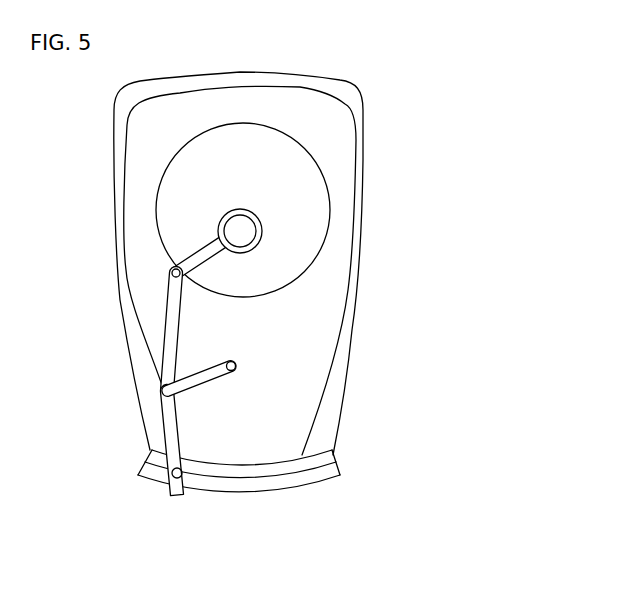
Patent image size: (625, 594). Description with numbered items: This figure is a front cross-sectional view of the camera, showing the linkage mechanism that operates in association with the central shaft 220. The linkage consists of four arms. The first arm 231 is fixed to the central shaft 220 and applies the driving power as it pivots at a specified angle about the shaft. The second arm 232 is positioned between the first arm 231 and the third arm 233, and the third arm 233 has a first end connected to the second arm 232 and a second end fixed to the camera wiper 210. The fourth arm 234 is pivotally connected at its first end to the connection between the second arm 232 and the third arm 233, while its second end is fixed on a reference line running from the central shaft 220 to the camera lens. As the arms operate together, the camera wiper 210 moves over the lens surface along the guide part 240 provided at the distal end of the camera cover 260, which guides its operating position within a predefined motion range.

The camera wiper 210 is at (172, 477).
The central shaft 220 is at (243, 232).
The first arm 231 is at (200, 258).
The second arm 232 is at (172, 315).
The third arm 233 is at (170, 422).
The fourth arm 234 is at (236, 371).
The guide part 240 is at (335, 464).
The camera cover 260 is at (340, 155).